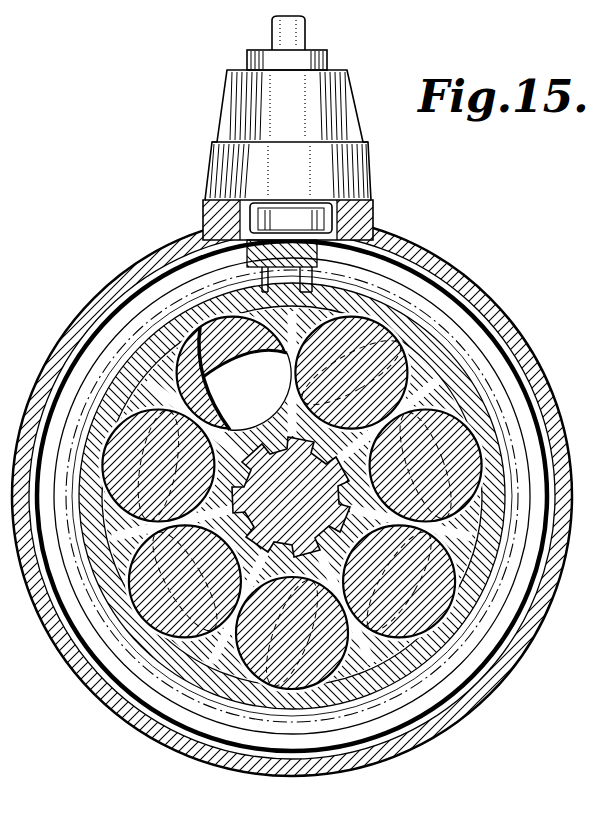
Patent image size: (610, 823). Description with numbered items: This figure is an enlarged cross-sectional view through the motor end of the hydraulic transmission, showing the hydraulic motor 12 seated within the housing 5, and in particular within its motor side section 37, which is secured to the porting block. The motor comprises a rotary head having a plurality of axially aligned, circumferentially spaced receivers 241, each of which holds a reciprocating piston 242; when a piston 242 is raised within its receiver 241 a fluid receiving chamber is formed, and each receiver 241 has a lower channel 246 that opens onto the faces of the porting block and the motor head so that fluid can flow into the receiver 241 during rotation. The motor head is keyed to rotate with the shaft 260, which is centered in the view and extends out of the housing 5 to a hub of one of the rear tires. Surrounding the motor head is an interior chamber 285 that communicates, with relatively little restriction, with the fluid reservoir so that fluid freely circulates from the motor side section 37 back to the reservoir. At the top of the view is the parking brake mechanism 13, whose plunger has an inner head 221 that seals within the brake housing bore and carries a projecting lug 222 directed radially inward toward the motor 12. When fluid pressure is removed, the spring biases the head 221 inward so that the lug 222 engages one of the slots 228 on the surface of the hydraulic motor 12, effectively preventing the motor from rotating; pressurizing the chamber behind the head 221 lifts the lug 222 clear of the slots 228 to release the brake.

The housing 5 is at (545, 378).
The hydraulic motor 12 is at (478, 348).
The parking brake mechanism 13 is at (366, 176).
The motor side section 37 is at (447, 283).
The inner head 221 is at (258, 222).
The lug 222 is at (365, 241).
The slots 228 is at (412, 325).
The receivers 241 is at (246, 326).
The reciprocating pistons 242 is at (188, 412).
The lower channel 246 is at (236, 372).
The shaft 260 is at (300, 437).
The interior chamber 285 is at (168, 716).